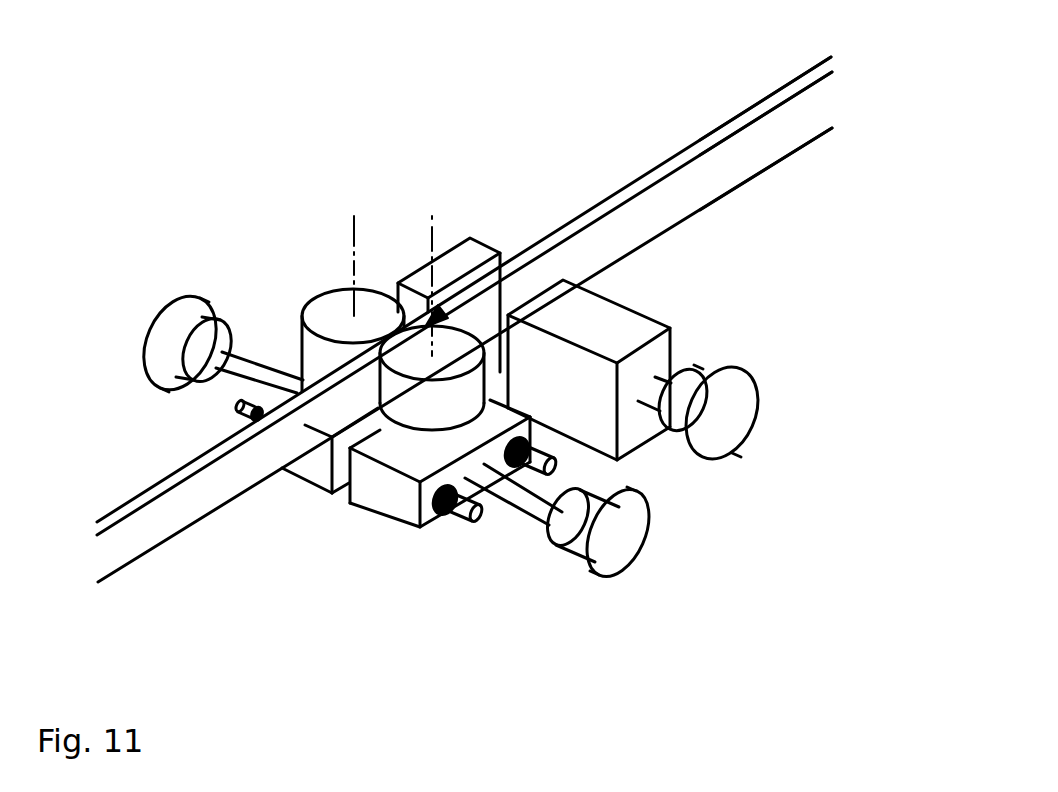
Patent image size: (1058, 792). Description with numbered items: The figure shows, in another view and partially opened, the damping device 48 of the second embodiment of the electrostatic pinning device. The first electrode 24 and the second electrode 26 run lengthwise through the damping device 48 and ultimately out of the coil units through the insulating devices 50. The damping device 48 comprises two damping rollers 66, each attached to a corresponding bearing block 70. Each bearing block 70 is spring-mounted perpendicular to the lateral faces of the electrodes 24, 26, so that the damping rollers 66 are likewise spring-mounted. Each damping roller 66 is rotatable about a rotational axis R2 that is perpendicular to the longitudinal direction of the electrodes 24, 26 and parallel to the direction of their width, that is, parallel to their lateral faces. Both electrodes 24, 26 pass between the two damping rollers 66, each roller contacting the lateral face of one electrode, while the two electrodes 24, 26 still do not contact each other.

The first electrode 24 is at (147, 493).
The second electrode 26 is at (148, 535).
The damping device 48 is at (189, 131).
The insulating device 50 is at (743, 112).
The damping roller 66 is at (322, 312).
The bearing block 70 is at (312, 470).
The rotational axis R2 is at (350, 237).